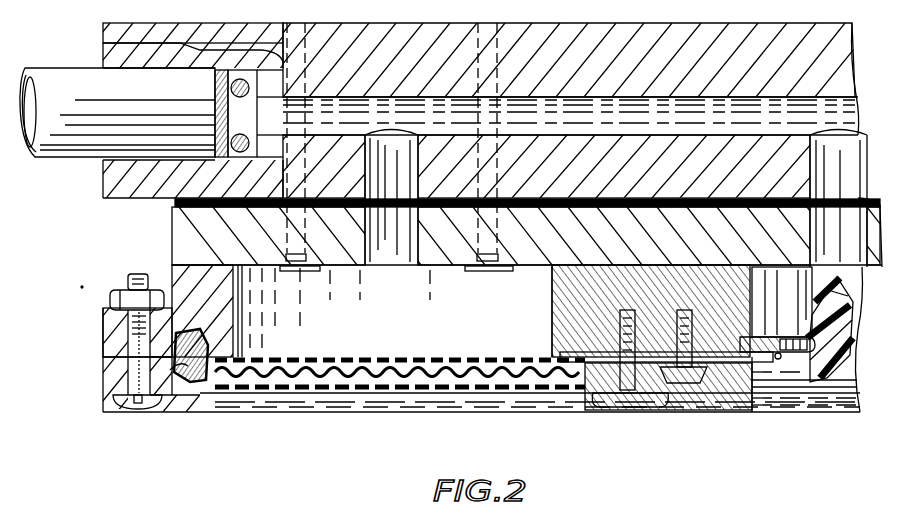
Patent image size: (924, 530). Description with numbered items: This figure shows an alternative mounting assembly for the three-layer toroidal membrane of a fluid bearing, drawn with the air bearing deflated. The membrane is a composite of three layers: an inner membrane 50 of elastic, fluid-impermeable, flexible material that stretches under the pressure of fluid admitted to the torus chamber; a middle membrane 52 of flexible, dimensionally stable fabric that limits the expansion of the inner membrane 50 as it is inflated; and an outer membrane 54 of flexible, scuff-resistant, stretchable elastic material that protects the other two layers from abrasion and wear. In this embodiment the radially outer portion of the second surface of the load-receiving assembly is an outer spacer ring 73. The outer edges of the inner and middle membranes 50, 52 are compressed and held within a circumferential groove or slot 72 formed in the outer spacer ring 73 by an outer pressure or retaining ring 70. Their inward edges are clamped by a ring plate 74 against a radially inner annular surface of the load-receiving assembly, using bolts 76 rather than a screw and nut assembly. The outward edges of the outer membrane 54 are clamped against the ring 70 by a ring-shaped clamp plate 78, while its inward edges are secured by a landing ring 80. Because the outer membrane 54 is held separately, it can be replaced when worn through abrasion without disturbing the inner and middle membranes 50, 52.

The inner membrane 50 is at (372, 360).
The middle membrane 52 is at (430, 362).
The outer membrane 54 is at (352, 385).
The outer pressure ring 70 is at (203, 378).
The circumferential groove 72 is at (205, 340).
The outer spacer ring 73 is at (192, 282).
The ring plate 74 is at (590, 383).
The bolts 76 is at (693, 377).
The clamp plate 78 is at (187, 400).
The landing ring 80 is at (737, 397).